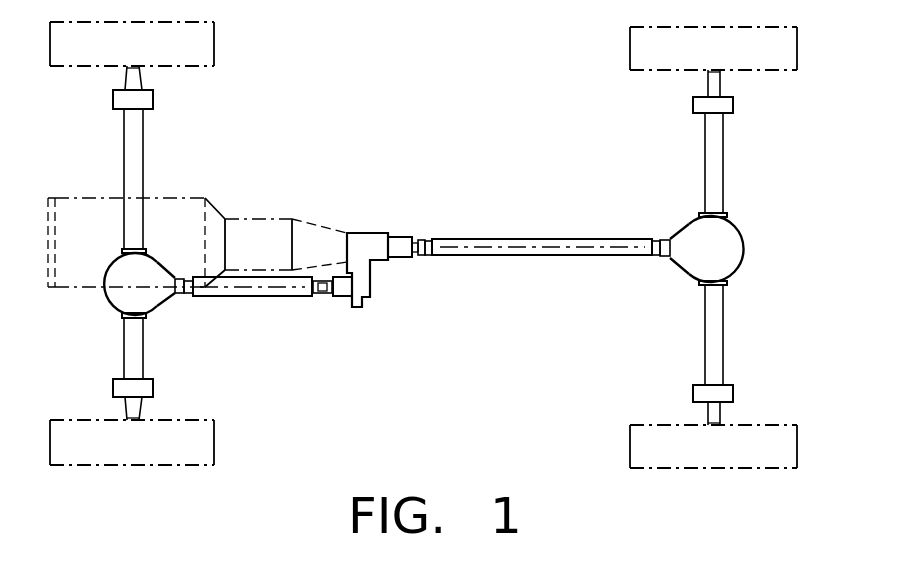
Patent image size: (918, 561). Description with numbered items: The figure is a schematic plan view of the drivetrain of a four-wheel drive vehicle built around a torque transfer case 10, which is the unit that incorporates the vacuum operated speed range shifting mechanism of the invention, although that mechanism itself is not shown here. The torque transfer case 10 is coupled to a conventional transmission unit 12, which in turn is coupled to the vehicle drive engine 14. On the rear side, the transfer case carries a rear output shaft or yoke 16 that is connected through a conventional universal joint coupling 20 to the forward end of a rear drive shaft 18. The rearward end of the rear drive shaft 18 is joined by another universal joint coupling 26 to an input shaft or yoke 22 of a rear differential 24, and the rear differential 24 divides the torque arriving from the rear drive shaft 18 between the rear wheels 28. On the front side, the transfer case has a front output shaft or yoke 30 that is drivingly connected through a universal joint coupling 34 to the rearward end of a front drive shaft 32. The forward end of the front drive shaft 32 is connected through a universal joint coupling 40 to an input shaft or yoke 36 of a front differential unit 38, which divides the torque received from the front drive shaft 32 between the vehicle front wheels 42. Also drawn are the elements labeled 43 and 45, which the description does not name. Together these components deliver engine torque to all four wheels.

The torque transfer case 10 is at (391, 221).
The transmission unit 12 is at (263, 218).
The vehicle drive engine 14 is at (178, 197).
The rear output shaft or yoke 16 is at (421, 240).
The rear drive shaft 18 is at (505, 240).
The universal joint coupling 20 is at (421, 257).
The input shaft or yoke 22 is at (665, 240).
The rear differential 24 is at (725, 243).
The universal joint coupling 26 is at (665, 258).
The rear wheels 28 is at (630, 53).
The front output shaft or yoke 30 is at (322, 297).
The front drive shaft 32 is at (303, 297).
The universal joint coupling 34 is at (312, 262).
The input shaft or yoke 36 is at (180, 297).
The front differential unit 38 is at (121, 298).
The universal joint coupling 40 is at (178, 277).
The front wheels 42 is at (214, 43).
The propeller shaft section 43 is at (562, 257).
The front drive shaft 45 is at (218, 292).